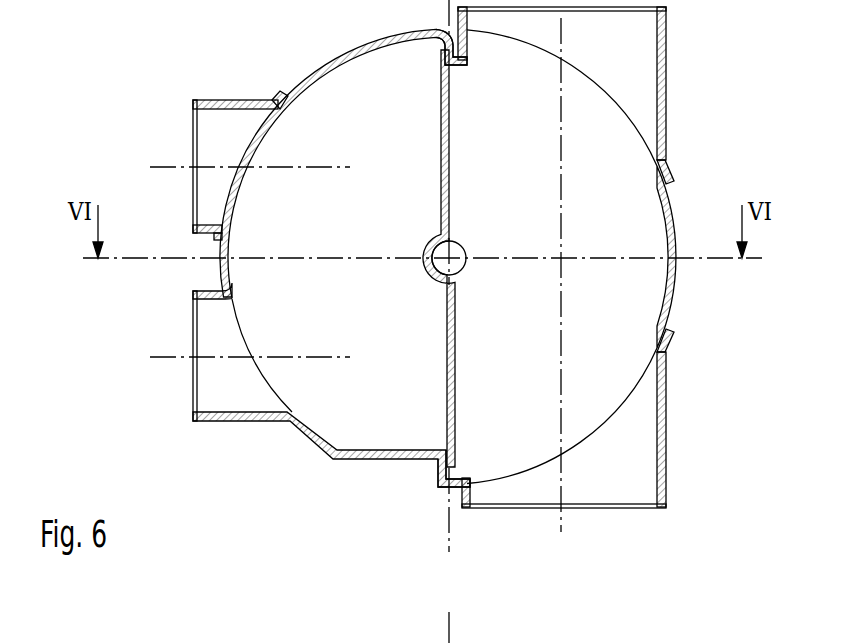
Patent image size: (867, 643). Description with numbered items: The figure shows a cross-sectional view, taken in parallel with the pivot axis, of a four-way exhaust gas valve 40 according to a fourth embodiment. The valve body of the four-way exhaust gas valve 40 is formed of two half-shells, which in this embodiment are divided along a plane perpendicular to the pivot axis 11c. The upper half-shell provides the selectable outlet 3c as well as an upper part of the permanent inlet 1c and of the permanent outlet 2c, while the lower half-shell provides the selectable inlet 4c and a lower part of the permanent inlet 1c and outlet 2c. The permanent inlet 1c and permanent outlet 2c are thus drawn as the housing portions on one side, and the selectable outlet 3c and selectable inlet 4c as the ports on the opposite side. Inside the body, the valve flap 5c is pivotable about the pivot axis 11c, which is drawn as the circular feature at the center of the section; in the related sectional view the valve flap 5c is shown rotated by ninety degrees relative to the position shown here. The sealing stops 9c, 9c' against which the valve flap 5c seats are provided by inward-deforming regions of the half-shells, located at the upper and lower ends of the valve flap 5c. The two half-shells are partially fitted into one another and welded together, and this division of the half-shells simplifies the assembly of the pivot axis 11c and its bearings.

The permanent inlet 1c is at (662, 70).
The permanent outlet 2c is at (662, 439).
The selectable outlet 3c is at (216, 99).
The selectable inlet 4c is at (221, 422).
The valve flap 5c is at (428, 68).
The sealing stop 9c is at (461, 78).
The sealing stop 9c' is at (481, 461).
The pivot axis 11c is at (458, 265).
The four-way exhaust gas valve 40 is at (166, 322).